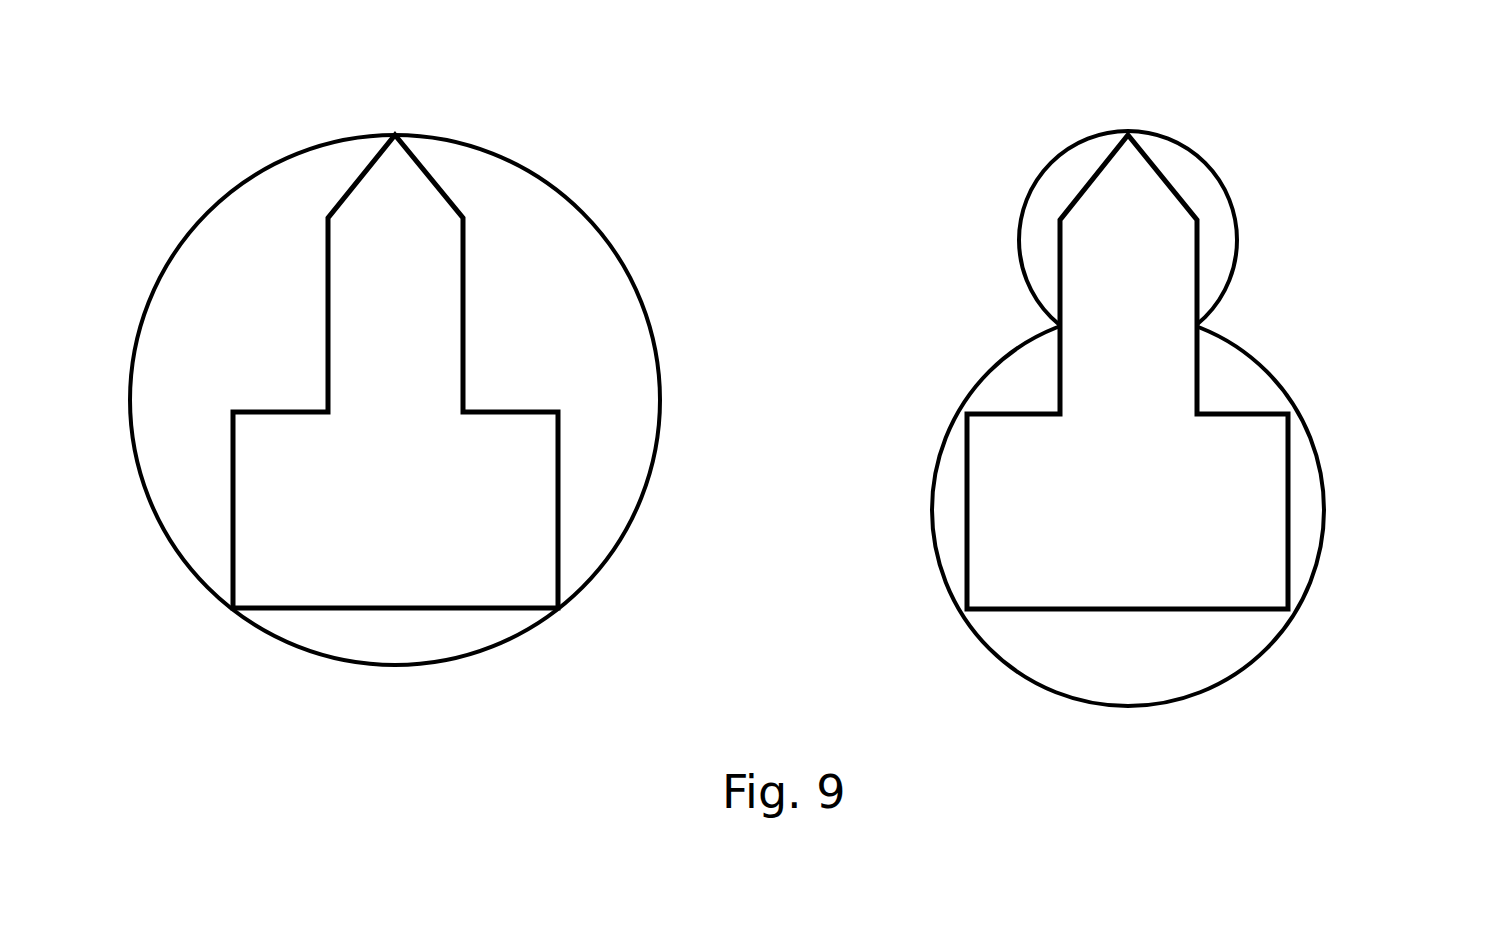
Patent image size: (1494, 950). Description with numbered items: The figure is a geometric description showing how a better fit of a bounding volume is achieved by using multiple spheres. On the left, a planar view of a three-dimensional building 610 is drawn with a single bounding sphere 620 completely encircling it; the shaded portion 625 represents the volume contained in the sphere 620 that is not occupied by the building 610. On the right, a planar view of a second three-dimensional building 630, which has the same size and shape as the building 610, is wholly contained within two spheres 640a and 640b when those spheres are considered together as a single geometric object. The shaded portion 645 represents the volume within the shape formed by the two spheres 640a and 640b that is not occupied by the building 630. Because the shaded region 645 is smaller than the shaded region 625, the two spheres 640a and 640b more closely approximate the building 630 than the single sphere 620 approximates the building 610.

The 3-dimensional building 610 is at (476, 382).
The single bounding sphere 620 is at (432, 361).
The shaded portion 625 is at (432, 400).
The 3-dimensional building 630 is at (1067, 372).
The sphere 640a is at (1164, 203).
The sphere 640b is at (1200, 490).
The shaded portion 645 is at (1077, 203).